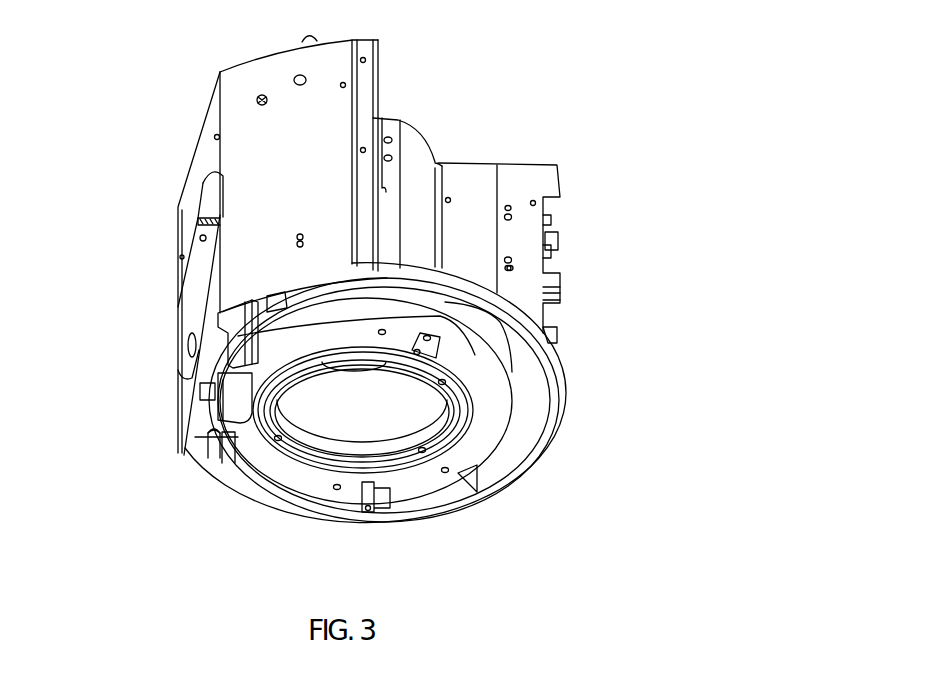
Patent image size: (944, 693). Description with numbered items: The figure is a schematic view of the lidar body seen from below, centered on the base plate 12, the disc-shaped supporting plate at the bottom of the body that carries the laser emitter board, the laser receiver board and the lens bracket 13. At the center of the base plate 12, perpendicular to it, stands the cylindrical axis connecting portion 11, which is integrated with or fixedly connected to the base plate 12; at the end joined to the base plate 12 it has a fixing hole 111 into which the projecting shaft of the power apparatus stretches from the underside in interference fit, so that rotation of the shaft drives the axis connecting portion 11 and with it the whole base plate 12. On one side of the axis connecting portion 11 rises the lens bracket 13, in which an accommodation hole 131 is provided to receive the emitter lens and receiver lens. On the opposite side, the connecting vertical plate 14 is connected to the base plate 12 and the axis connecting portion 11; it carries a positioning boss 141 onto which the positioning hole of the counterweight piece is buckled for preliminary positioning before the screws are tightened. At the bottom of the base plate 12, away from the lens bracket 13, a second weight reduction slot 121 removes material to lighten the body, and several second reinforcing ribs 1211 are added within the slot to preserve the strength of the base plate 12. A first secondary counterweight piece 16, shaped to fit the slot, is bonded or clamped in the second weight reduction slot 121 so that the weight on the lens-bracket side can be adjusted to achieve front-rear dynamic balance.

The axis connecting portion 11 is at (410, 155).
The fixing hole 111 is at (372, 385).
The base plate 12 is at (563, 383).
The second weight reduction slot 121 is at (200, 445).
The second reinforcing rib 1211 is at (232, 367).
The lens bracket 13 is at (248, 93).
The accommodation hole 131 is at (202, 298).
The connecting vertical plate 14 is at (535, 182).
The positioning boss 141 is at (557, 283).
The first secondary counterweight piece 16 is at (230, 403).